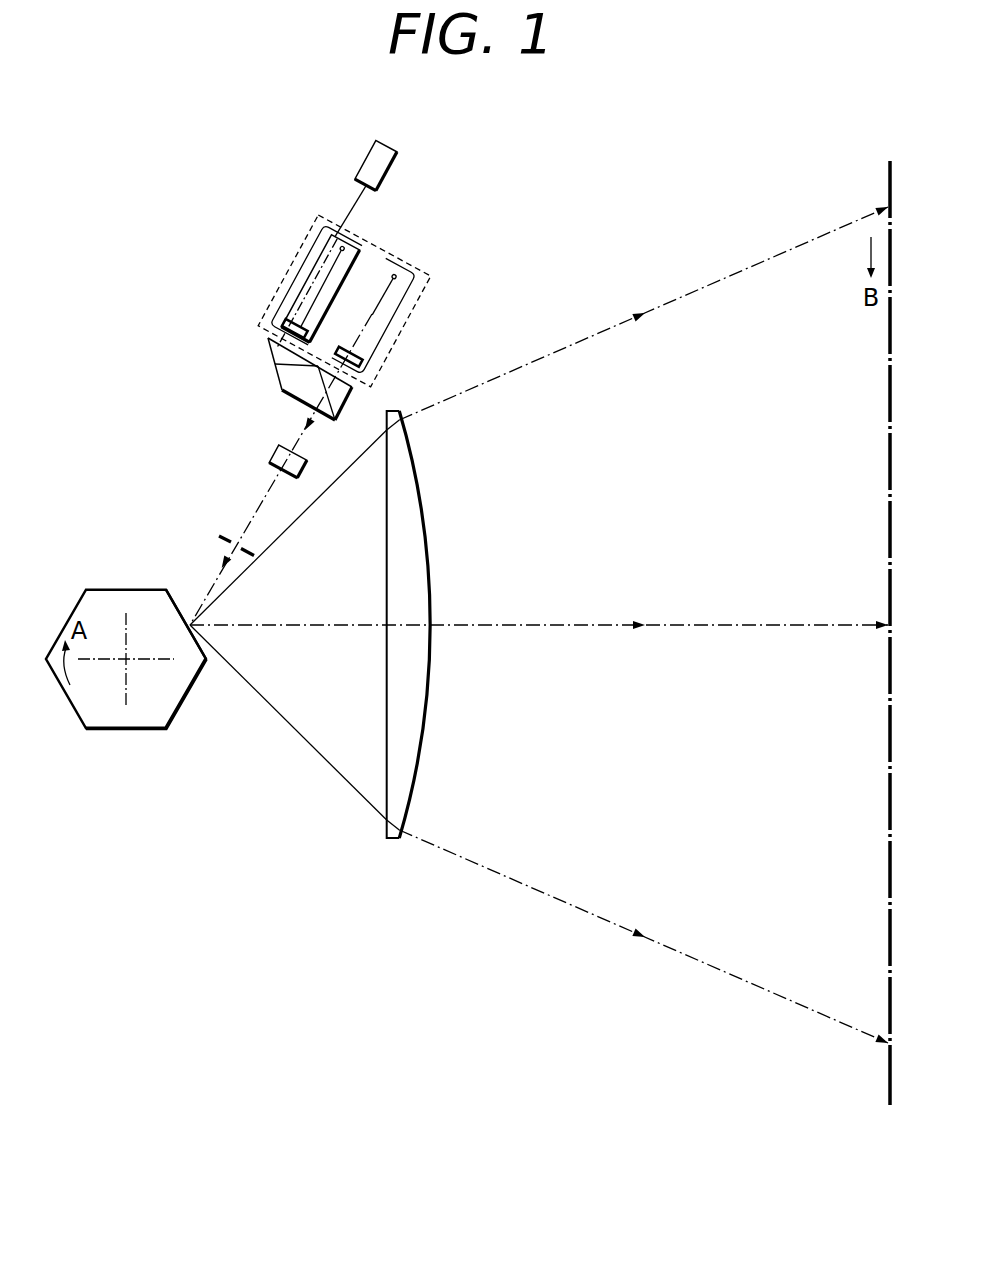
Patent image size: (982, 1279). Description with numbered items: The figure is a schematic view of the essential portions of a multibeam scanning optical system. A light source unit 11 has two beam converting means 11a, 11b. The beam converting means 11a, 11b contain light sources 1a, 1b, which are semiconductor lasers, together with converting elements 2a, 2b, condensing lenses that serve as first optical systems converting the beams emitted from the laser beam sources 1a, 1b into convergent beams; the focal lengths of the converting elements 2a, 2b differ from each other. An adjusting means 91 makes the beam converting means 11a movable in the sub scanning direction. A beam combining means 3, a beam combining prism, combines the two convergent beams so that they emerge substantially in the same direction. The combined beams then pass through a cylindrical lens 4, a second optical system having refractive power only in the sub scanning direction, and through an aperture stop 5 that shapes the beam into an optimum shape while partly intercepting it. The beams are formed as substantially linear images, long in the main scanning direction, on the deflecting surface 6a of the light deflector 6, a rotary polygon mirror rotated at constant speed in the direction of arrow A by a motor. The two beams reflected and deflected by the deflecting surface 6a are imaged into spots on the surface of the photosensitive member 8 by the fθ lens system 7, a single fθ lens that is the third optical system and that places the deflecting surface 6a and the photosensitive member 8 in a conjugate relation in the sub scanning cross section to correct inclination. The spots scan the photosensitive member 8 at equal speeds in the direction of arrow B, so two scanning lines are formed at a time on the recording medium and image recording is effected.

The light source 1a is at (344, 247).
The light source 1b is at (398, 276).
The converting element 2a is at (300, 325).
The converting element 2b is at (341, 349).
The beam combining means 3 is at (278, 372).
The cylindrical lens 4 is at (272, 451).
The aperture stop 5 is at (221, 534).
The light deflector 6 is at (102, 590).
The deflecting surface 6a is at (182, 597).
The fθ lens system 7 is at (393, 840).
The photosensitive member 8 is at (889, 1083).
The light source unit 11 is at (395, 254).
The beam converting means 11a is at (300, 266).
The beam converting means 11b is at (386, 337).
The adjusting means 91 is at (397, 150).